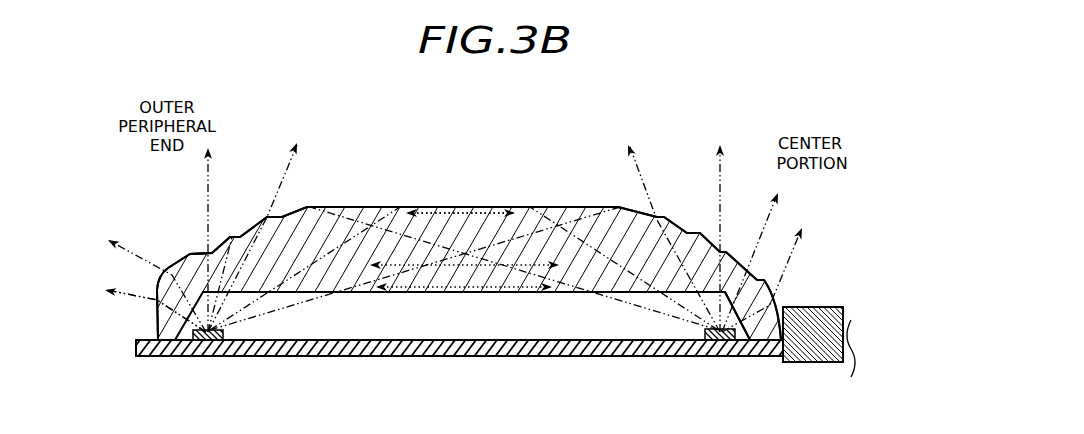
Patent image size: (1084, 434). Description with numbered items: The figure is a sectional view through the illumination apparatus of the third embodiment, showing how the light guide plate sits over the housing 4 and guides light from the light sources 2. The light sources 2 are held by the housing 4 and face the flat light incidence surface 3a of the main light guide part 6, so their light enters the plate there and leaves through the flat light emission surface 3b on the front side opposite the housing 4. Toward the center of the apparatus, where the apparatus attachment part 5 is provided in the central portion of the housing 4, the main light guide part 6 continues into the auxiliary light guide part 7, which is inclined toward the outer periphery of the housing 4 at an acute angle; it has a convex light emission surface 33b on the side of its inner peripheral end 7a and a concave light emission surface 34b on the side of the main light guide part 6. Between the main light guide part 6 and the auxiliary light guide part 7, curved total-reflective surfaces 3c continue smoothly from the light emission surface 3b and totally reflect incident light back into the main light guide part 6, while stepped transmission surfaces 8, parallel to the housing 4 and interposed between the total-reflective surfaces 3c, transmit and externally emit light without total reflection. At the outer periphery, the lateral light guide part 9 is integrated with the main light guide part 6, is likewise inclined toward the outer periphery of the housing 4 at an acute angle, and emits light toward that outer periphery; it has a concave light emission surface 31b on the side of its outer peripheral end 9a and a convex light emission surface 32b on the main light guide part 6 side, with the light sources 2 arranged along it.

The light source 2 is at (716, 383).
The light incidence surface 3a is at (492, 293).
The light emission surface 3b is at (478, 207).
The total-reflective surface 3c is at (640, 208).
The housing 4 is at (465, 357).
The apparatus attachment part 5 is at (812, 362).
The main light guide part 6 is at (431, 212).
The auxiliary light guide part 7 is at (745, 357).
The inner peripheral end 7a is at (763, 357).
The transmission surface 8 is at (723, 253).
The lateral light guide part 9 is at (173, 290).
The outer peripheral end 9a is at (163, 357).
The concave light emission surface 31b is at (158, 318).
The convex light emission surface 32b is at (175, 267).
The convex light emission surface 33b is at (766, 277).
The concave light emission surface 34b is at (733, 264).